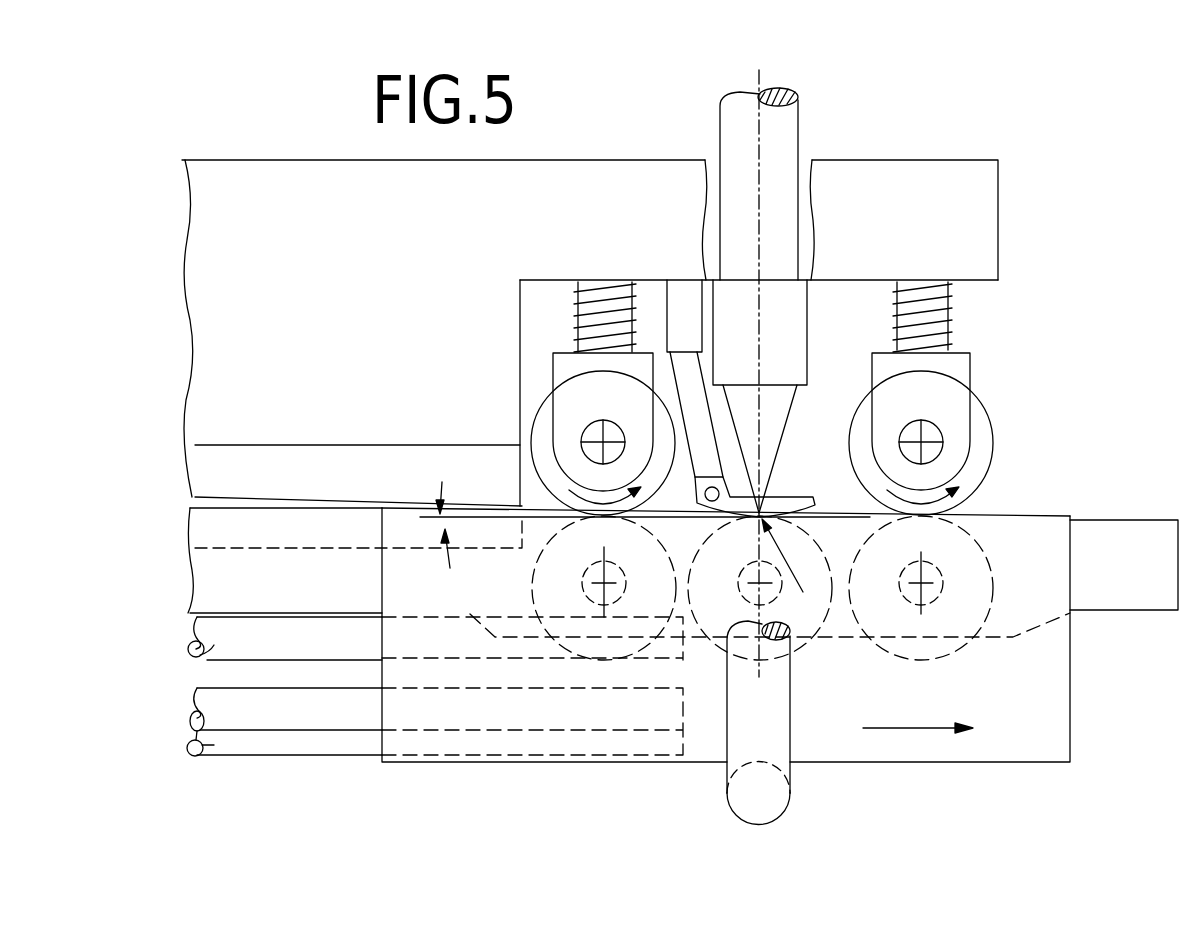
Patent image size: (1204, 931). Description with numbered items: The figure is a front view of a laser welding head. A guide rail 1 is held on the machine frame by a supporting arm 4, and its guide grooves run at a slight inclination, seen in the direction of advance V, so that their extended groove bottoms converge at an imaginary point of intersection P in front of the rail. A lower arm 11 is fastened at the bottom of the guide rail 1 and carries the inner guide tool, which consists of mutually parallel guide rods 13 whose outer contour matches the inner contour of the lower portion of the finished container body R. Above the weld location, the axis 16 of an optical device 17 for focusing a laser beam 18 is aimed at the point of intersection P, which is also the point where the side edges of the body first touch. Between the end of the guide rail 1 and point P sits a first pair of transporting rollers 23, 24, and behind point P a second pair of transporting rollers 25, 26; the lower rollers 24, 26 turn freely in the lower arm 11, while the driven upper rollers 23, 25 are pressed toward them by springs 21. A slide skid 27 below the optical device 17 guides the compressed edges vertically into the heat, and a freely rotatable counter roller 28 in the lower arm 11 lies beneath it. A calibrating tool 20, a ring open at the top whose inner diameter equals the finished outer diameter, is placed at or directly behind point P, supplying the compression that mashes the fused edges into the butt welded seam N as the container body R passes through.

The guide rail 1 is at (293, 460).
The supporting arm 4 is at (220, 183).
The lower arm 11 is at (205, 572).
The guide rods 13 is at (192, 742).
The axis 16 is at (758, 317).
The optical device 17 is at (797, 307).
The laser beam 18 is at (770, 430).
The calibrating tool 20 is at (777, 731).
The springs 21 is at (950, 330).
The upper transporting roller 23 is at (543, 420).
The lower transporting roller 24 is at (532, 590).
The upper transporting roller 25 is at (978, 425).
The lower transporting roller 26 is at (958, 617).
The slide skid 27 is at (781, 503).
The counter roller 28 is at (803, 625).
The butt mash welded seam N is at (1038, 513).
The container body R is at (1048, 723).
The point of intersection P is at (794, 568).
The direction of advance V is at (932, 730).